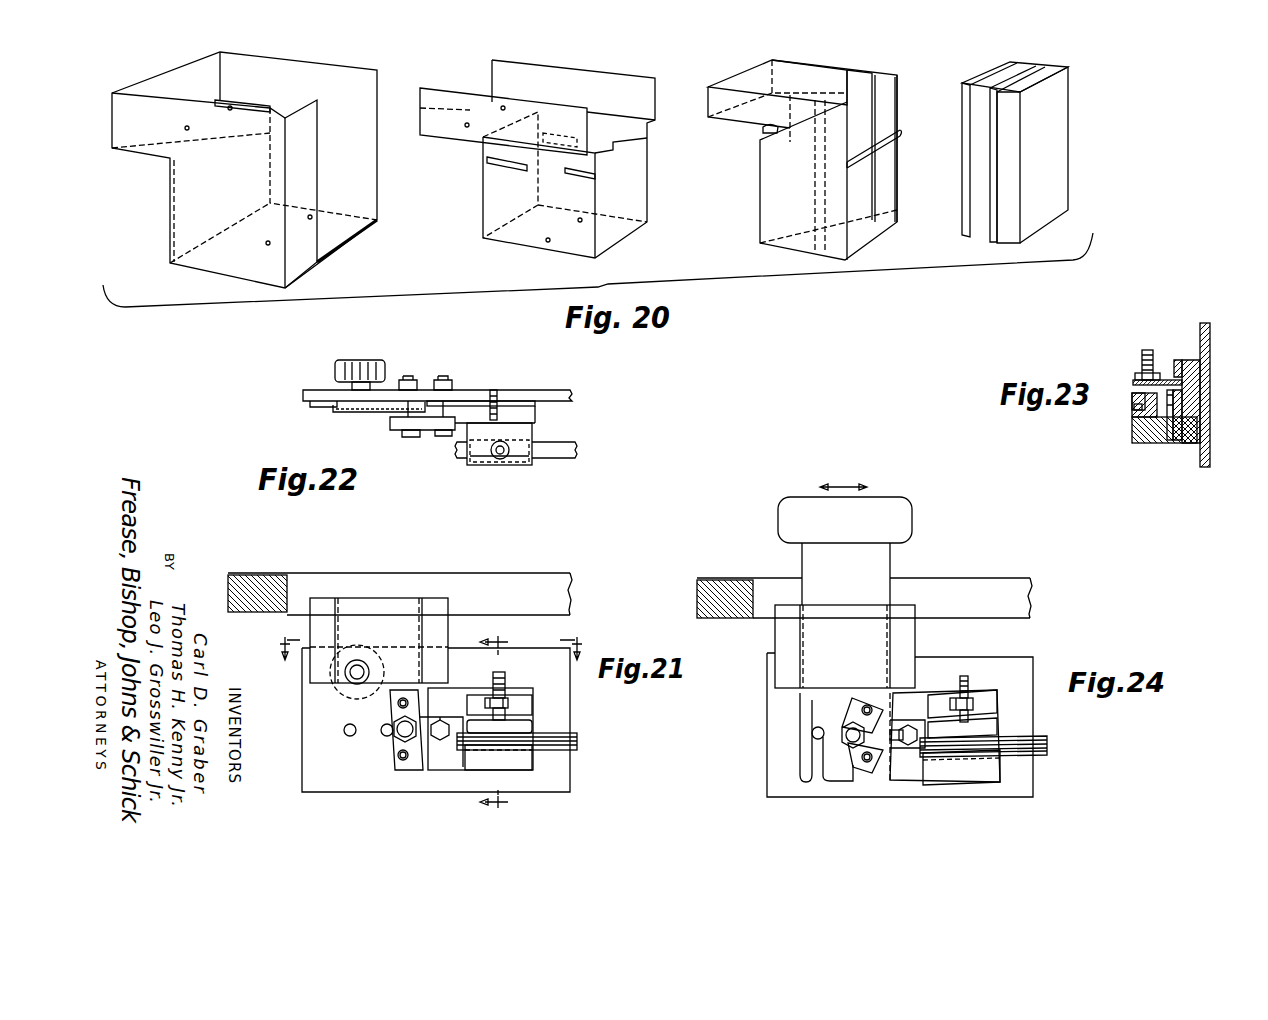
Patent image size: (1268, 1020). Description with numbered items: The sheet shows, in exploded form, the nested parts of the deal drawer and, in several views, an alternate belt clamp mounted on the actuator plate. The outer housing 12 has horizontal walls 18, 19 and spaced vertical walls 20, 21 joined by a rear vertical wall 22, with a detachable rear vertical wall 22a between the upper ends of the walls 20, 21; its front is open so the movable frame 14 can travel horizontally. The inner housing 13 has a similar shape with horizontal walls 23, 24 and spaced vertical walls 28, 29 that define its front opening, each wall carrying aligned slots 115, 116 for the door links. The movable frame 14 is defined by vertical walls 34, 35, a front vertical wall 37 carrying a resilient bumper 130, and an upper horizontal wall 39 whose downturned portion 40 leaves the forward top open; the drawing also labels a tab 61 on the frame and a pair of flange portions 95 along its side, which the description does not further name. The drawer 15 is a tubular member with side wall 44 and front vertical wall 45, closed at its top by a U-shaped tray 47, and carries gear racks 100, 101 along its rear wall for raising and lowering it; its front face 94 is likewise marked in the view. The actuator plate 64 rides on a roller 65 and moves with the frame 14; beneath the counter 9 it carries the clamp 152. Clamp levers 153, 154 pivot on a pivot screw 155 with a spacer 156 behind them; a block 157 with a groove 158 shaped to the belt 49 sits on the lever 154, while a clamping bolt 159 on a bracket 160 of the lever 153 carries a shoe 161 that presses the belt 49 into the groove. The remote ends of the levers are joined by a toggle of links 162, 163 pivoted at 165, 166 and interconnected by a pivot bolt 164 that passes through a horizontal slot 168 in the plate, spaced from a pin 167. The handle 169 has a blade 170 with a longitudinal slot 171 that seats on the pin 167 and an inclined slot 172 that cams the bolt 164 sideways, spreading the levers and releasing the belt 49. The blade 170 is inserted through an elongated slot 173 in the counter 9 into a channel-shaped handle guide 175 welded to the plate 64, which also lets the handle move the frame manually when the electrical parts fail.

In FIG. 21, the counter 9 is at (250, 575).
In FIG. 24, the counter 9 is at (706, 580).
In FIG. 20, the outer housing 12 is at (324, 278).
In FIG. 20, the inner housing 13 is at (512, 255).
In FIG. 20, the movable frame 14 is at (784, 258).
In FIG. 20, the drawer 15 is at (972, 245).
In FIG. 20, the horizontal wall 18 is at (243, 106).
In FIG. 20, the horizontal wall 19 is at (343, 236).
In FIG. 20, the vertical wall 20 is at (218, 250).
In FIG. 20, the vertical wall 21 is at (360, 155).
In FIG. 20, the rear vertical wall 22 is at (168, 213).
In FIG. 21, the rear vertical wall 22 is at (431, 640).
In FIG. 20, the rear vertical wall 22a is at (163, 82).
In FIG. 20, the horizontal wall 23 is at (503, 121).
In FIG. 21, the horizontal wall 23 is at (503, 723).
In FIG. 20, the horizontal wall 24 is at (618, 231).
In FIG. 20, the vertical wall 28 is at (472, 130).
In FIG. 20, the vertical wall 29 is at (583, 78).
In FIG. 20, the vertical wall 34 is at (768, 208).
In FIG. 20, the vertical wall 35 is at (862, 80).
In FIG. 20, the front vertical wall 37 is at (888, 190).
In FIG. 20, the upper horizontal wall 39 is at (792, 72).
In FIG. 20, the downturned portion 40 is at (832, 83).
In FIG. 20, the side wall 44 is at (1035, 66).
In FIG. 20, the front vertical wall 45 is at (1060, 148).
In FIG. 20, the tray 47 is at (1000, 72).
In FIG. 22, the belt 49 is at (555, 460).
In FIG. 23, the belt 49 is at (1134, 409).
In FIG. 21, the belt 49 is at (577, 743).
In FIG. 24, the belt 49 is at (1047, 745).
In FIG. 20, the tab 61 is at (765, 132).
In FIG. 22, the actuator plate 64 is at (524, 392).
In FIG. 23, the actuator plate 64 is at (1210, 340).
In FIG. 21, the actuator plate 64 is at (312, 752).
In FIG. 24, the actuator plate 64 is at (770, 737).
In FIG. 22, the roller 65 is at (372, 362).
In FIG. 21, the roller 65 is at (357, 650).
In FIG. 20, the front face 94 is at (996, 176).
In FIG. 20, the slot 95 is at (878, 91).
In FIG. 20, the gear rack 100 is at (964, 140).
In FIG. 20, the gear rack 101 is at (1010, 62).
In FIG. 20, the slot 115 is at (577, 178).
In FIG. 20, the second elongated slot 116 is at (507, 166).
In FIG. 20, the bumper 130 is at (900, 134).
In FIG. 22, the clamp 152 is at (479, 476).
In FIG. 23, the clamp 152 is at (1117, 375).
In FIG. 21, the clamp 152 is at (382, 768).
In FIG. 24, the clamp 152 is at (1020, 683).
In FIG. 22, the clamp lever 153 is at (535, 424).
In FIG. 23, the clamp lever 153 is at (1180, 360).
In FIG. 21, the clamp lever 153 is at (448, 695).
In FIG. 24, the clamp lever 153 is at (918, 695).
In FIG. 22, the clamp lever 154 is at (430, 434).
In FIG. 23, the clamp lever 154 is at (1172, 442).
In FIG. 21, the clamp lever 154 is at (450, 760).
In FIG. 24, the clamp lever 154 is at (912, 782).
In FIG. 22, the pivot screw 155 is at (447, 438).
In FIG. 21, the pivot screw 155 is at (441, 732).
In FIG. 24, the pivot screw 155 is at (908, 746).
In FIG. 22, the spacer 156 is at (525, 410).
In FIG. 23, the spacer 156 is at (1200, 371).
In FIG. 21, the spacer 156 is at (524, 692).
In FIG. 24, the spacer 156 is at (997, 712).
In FIG. 23, the block 157 is at (1140, 444).
In FIG. 21, the block 157 is at (520, 762).
In FIG. 24, the block 157 is at (975, 782).
In FIG. 23, the groove 158 is at (1132, 418).
In FIG. 22, the clamping bolt 159 is at (500, 460).
In FIG. 23, the clamping bolt 159 is at (1142, 353).
In FIG. 21, the clamping bolt 159 is at (499, 678).
In FIG. 24, the clamping bolt 159 is at (968, 690).
In FIG. 22, the bracket 160 is at (520, 437).
In FIG. 23, the bracket 160 is at (1156, 380).
In FIG. 21, the bracket 160 is at (510, 703).
In FIG. 24, the bracket 160 is at (983, 703).
In FIG. 22, the shoe 161 is at (518, 462).
In FIG. 23, the shoe 161 is at (1132, 400).
In FIG. 21, the shoe 161 is at (532, 727).
In FIG. 24, the shoe 161 is at (985, 728).
In FIG. 21, the link 162 is at (395, 718).
In FIG. 24, the link 162 is at (852, 708).
In FIG. 21, the link 163 is at (386, 752).
In FIG. 24, the link 163 is at (853, 762).
In FIG. 22, the pivot bolt 164 is at (408, 440).
In FIG. 21, the pivot bolt 164 is at (418, 755).
In FIG. 24, the pivot bolt 164 is at (843, 728).
In FIG. 21, the pivot 165 is at (403, 698).
In FIG. 24, the pivot 165 is at (867, 705).
In FIG. 22, the pivot 166 is at (398, 434).
In FIG. 21, the pivot 166 is at (404, 772).
In FIG. 24, the pivot 166 is at (866, 763).
In FIG. 22, the pin 167 is at (332, 412).
In FIG. 21, the pin 167 is at (346, 726).
In FIG. 24, the pin 167 is at (813, 737).
In FIG. 21, the horizontal slot 168 is at (386, 733).
In FIG. 24, the horizontal slot 168 is at (890, 728).
In FIG. 24, the handle 169 is at (890, 550).
In FIG. 24, the blade 170 is at (800, 707).
In FIG. 24, the slot 171 is at (806, 783).
In FIG. 24, the slot 172 is at (870, 775).
In FIG. 21, the elongated slot 173 is at (297, 580).
In FIG. 24, the elongated slot 173 is at (770, 583).
In FIG. 22, the handle guide 175 is at (370, 412).
In FIG. 21, the handle guide 175 is at (440, 630).
In FIG. 24, the handle guide 175 is at (778, 632).